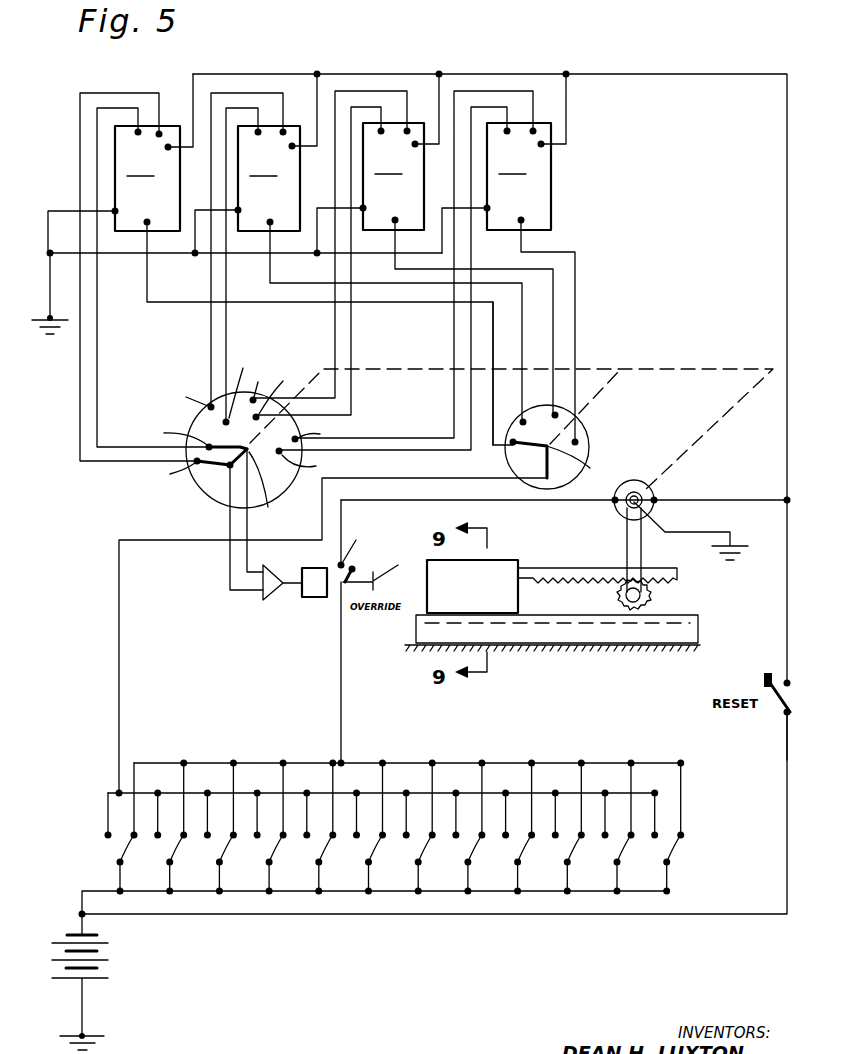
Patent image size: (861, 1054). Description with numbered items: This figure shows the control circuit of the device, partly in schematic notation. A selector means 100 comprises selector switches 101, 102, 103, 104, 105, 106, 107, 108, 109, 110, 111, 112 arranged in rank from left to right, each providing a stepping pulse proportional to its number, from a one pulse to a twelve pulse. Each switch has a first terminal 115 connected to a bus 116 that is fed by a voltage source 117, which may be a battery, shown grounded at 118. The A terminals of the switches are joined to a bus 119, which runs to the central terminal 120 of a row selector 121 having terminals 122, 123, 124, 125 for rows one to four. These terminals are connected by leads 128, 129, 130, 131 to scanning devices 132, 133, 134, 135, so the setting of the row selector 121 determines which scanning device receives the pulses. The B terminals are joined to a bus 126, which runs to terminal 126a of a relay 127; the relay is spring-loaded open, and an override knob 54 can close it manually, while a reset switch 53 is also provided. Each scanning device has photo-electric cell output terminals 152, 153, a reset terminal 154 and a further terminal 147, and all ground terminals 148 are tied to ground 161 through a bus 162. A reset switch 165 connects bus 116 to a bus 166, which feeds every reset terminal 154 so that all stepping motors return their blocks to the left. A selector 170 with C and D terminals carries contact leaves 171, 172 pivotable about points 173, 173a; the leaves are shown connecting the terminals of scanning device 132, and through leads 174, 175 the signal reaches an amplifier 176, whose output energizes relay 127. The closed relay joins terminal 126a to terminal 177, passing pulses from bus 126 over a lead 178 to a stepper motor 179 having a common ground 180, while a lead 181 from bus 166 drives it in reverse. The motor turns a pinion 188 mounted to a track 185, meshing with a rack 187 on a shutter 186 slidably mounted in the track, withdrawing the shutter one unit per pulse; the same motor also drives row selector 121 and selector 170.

The reset switch 53 is at (764, 679).
The override knob 54 is at (378, 572).
The selector means 100 is at (94, 820).
The selector switch 101 is at (129, 829).
The selector switch 102 is at (178, 829).
The selector switch 103 is at (228, 829).
The selector switch 104 is at (278, 829).
The selector switch 105 is at (328, 829).
The selector switch 106 is at (378, 829).
The selector switch 107 is at (428, 829).
The selector switch 108 is at (477, 829).
The selector switch 109 is at (527, 829).
The selector switch 110 is at (577, 829).
The selector switch 111 is at (627, 829).
The selector switch 112 is at (677, 829).
The first terminal 115 is at (118, 862).
The bus 116 is at (92, 893).
The voltage source 117 is at (92, 978).
The ground 118 is at (92, 1036).
The bus 119 is at (128, 793).
The central terminal 120 is at (590, 467).
The row selector 121 is at (600, 446).
The terminal 122 is at (511, 447).
The terminal 123 is at (522, 421).
The terminal 124 is at (554, 414).
The terminal 125 is at (578, 440).
The bus 126 is at (250, 763).
The relay terminal 126a is at (344, 592).
The relay 127 is at (306, 598).
The lead 128 is at (495, 305).
The lead 129 is at (524, 320).
The lead 130 is at (555, 340).
The lead 131 is at (575, 350).
The scanning device 132 is at (146, 178).
The scanning device 133 is at (256, 248).
The scanning device 134 is at (346, 244).
The scanning device 135 is at (422, 262).
The conductor 147 is at (146, 226).
The ground terminal 148 is at (113, 209).
The terminal 152 is at (138, 126).
The terminal 153 is at (156, 128).
The reset terminal 154 is at (168, 140).
The ground 161 is at (45, 306).
The bus 162 is at (50, 255).
The reset switch 165 is at (782, 708).
The bus 166 is at (676, 74).
The selector 170 is at (185, 416).
The contact leaf 171 is at (205, 466).
The contact leaf 172 is at (215, 473).
The pivot point 173 is at (228, 470).
The pivot point 173a is at (268, 500).
The conductor 174 is at (228, 573).
The conductor 175 is at (248, 561).
The amplifier 176 is at (272, 600).
The relay terminal 177 is at (358, 553).
The lead 178 is at (365, 500).
The stepper motor 179 is at (650, 488).
The common ground 180 is at (732, 541).
The lead 181 is at (752, 500).
The track 185 is at (558, 646).
The shutter 186 is at (497, 560).
The rack 187 is at (566, 569).
The pinion 188 is at (650, 598).